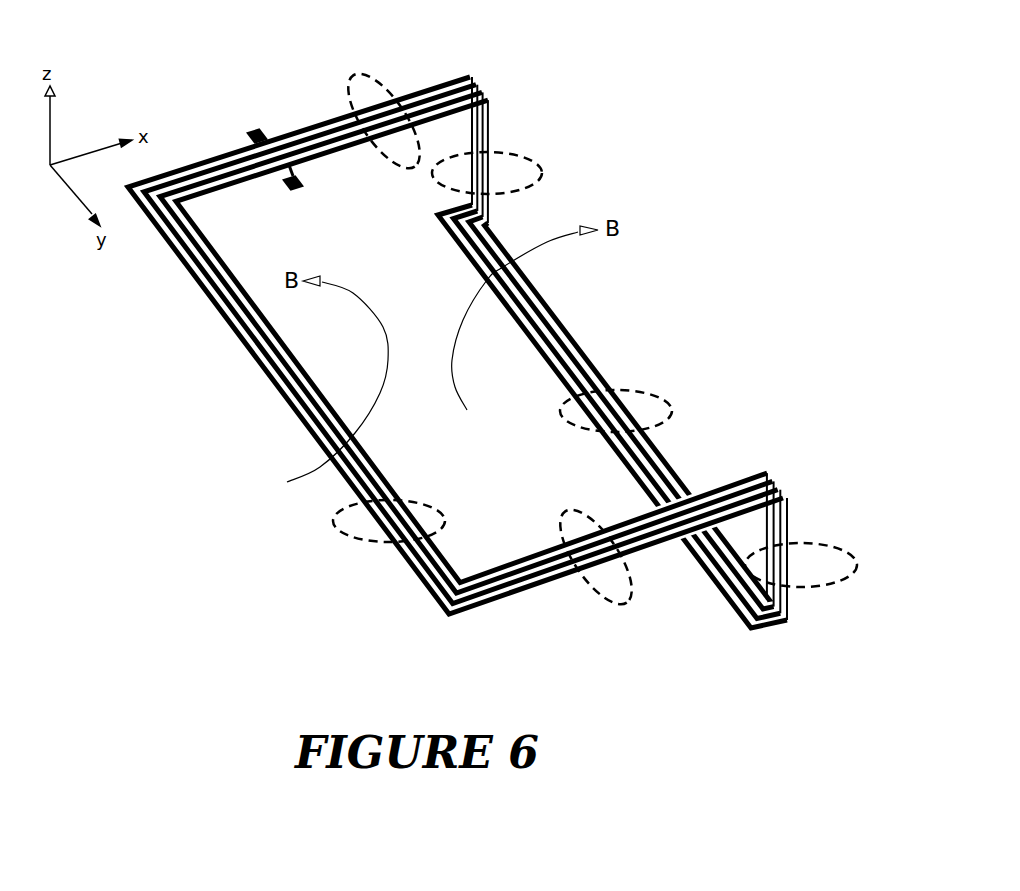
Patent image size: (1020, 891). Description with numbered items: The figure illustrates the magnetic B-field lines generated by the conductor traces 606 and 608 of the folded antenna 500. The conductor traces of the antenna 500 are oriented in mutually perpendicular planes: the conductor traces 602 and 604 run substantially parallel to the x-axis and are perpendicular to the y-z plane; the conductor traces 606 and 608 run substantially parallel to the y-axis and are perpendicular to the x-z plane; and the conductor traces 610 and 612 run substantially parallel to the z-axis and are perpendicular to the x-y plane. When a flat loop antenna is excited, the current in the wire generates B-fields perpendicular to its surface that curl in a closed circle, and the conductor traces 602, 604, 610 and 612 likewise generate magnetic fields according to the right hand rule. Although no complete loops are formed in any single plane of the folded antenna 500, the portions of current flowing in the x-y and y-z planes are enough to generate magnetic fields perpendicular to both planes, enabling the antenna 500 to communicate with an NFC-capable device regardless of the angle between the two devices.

The antenna 500 is at (212, 93).
The conductor trace 602 is at (628, 597).
The conductor trace 604 is at (364, 75).
The conductor trace 606 is at (338, 512).
The conductor trace 608 is at (655, 390).
The conductor trace 610 is at (526, 157).
The conductor trace 612 is at (832, 545).